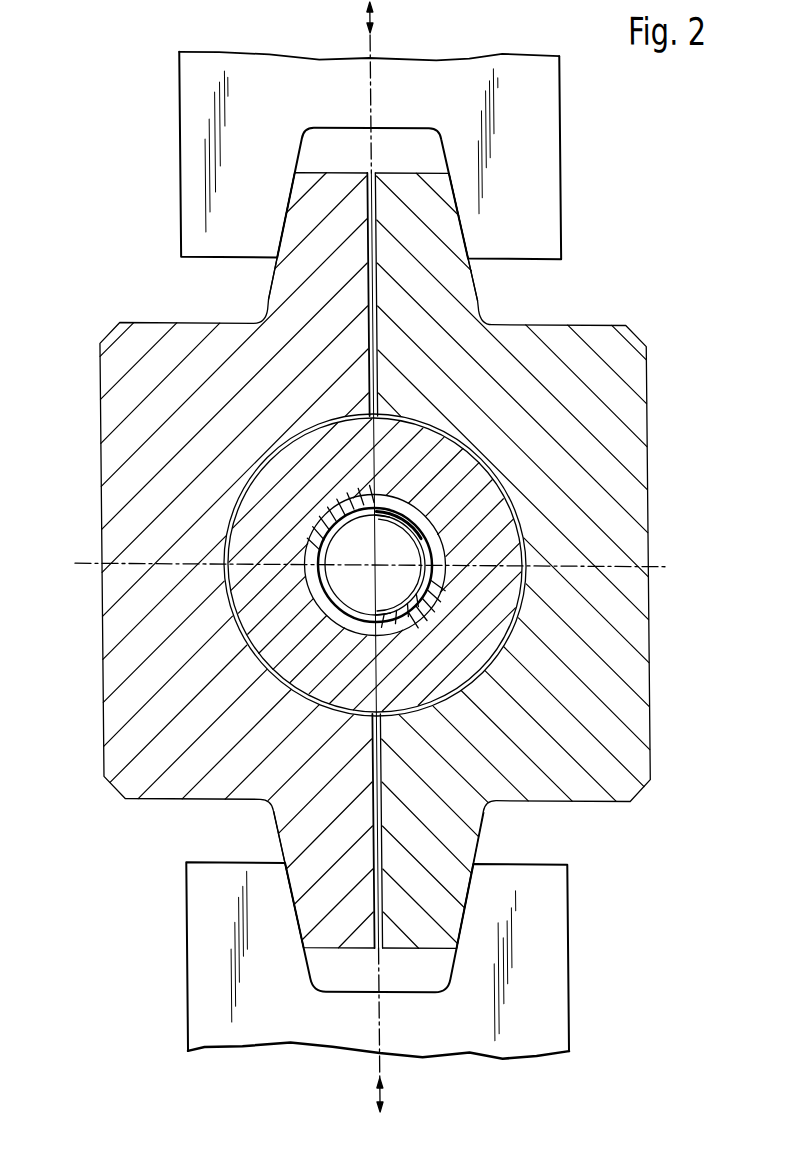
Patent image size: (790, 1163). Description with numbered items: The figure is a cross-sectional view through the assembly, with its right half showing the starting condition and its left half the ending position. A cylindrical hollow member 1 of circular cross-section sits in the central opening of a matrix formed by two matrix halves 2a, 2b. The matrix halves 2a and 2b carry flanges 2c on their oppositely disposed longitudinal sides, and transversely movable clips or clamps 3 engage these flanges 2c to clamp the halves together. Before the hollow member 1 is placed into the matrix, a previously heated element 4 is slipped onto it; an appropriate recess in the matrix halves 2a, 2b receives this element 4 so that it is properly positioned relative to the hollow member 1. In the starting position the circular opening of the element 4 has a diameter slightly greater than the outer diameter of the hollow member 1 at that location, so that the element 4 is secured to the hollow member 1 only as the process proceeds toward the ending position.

The hollow member 1 is at (437, 597).
The matrix half 2a is at (124, 410).
The matrix half 2b is at (629, 415).
The flanges 2c is at (443, 219).
The clips or clamps 3 is at (539, 130).
The previously heated element 4 is at (252, 618).